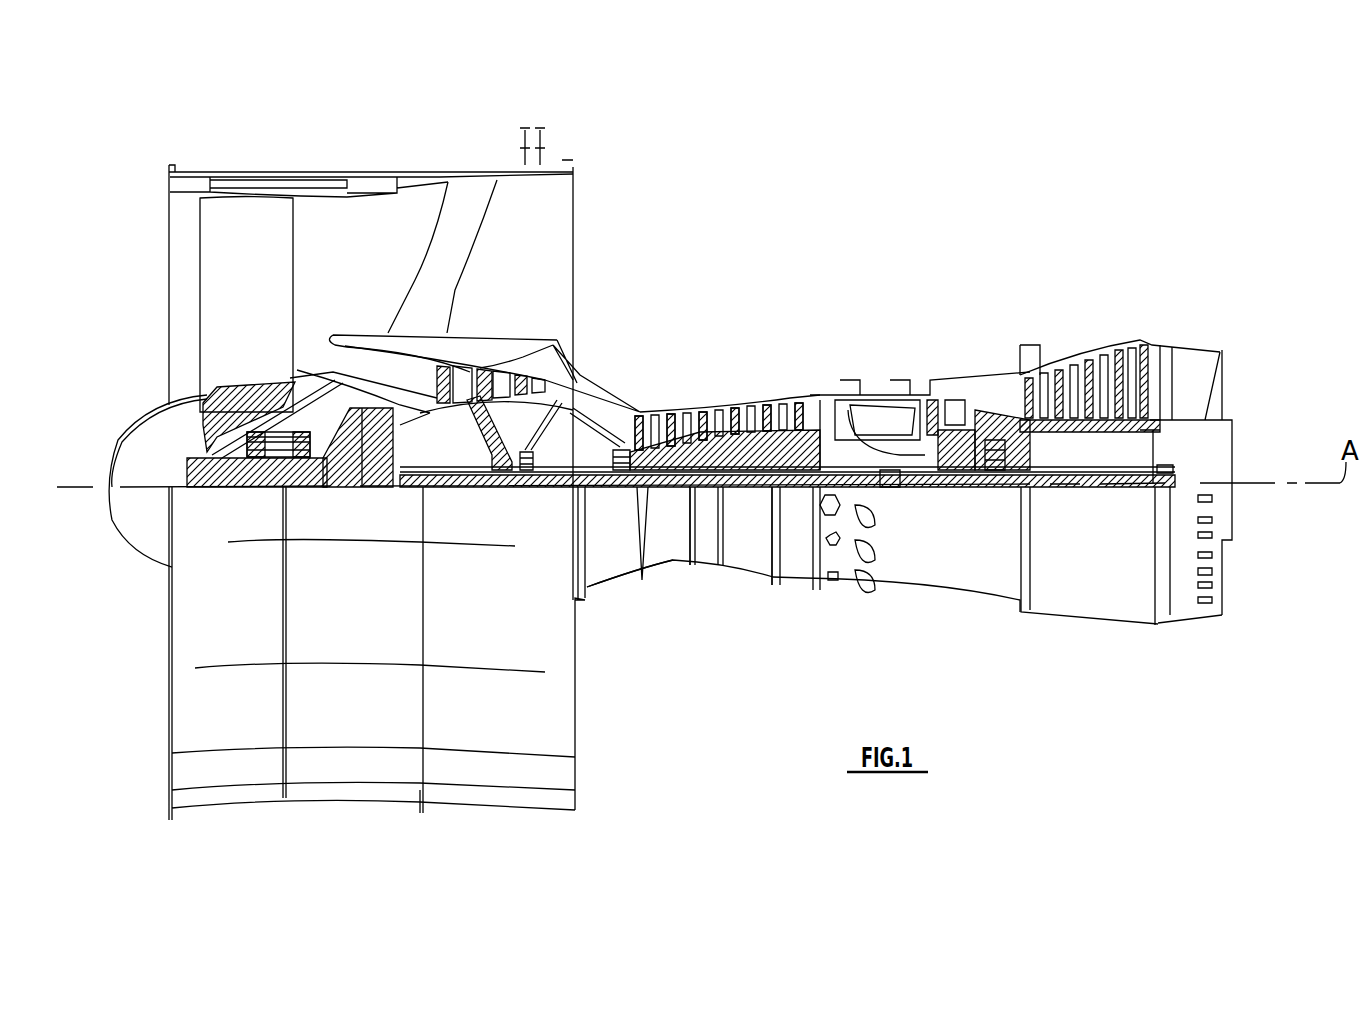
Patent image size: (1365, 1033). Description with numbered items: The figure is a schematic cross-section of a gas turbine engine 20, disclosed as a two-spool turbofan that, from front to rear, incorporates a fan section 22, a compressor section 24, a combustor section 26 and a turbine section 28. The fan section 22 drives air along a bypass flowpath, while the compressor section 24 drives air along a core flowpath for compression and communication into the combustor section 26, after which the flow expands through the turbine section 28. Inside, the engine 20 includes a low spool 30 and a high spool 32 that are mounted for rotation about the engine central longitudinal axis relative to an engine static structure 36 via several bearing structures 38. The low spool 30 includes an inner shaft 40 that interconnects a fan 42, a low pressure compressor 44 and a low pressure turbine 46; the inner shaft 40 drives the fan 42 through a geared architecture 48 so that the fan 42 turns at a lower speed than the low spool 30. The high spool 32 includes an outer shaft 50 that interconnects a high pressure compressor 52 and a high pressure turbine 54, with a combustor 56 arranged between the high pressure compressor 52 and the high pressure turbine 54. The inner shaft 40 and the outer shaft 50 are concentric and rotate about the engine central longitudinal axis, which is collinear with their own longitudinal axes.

The gas turbine engine 20 is at (898, 213).
The fan section 22 is at (415, 125).
The compressor section 24 is at (442, 280).
The combustor section 26 is at (933, 280).
The turbine section 28 is at (1160, 280).
The low spool 30 is at (748, 489).
The high spool 32 is at (800, 440).
The engine static structure 36 is at (796, 586).
The bearing structures 38 is at (527, 488).
The inner shaft 40 is at (592, 490).
The fan 42 is at (246, 305).
The low pressure compressor 44 is at (505, 350).
The low pressure turbine 46 is at (1097, 360).
The geared architecture 48 is at (382, 488).
The outer shaft 50 is at (890, 488).
The high pressure compressor 52 is at (725, 450).
The high pressure turbine 54 is at (950, 400).
The combustor 56 is at (885, 412).